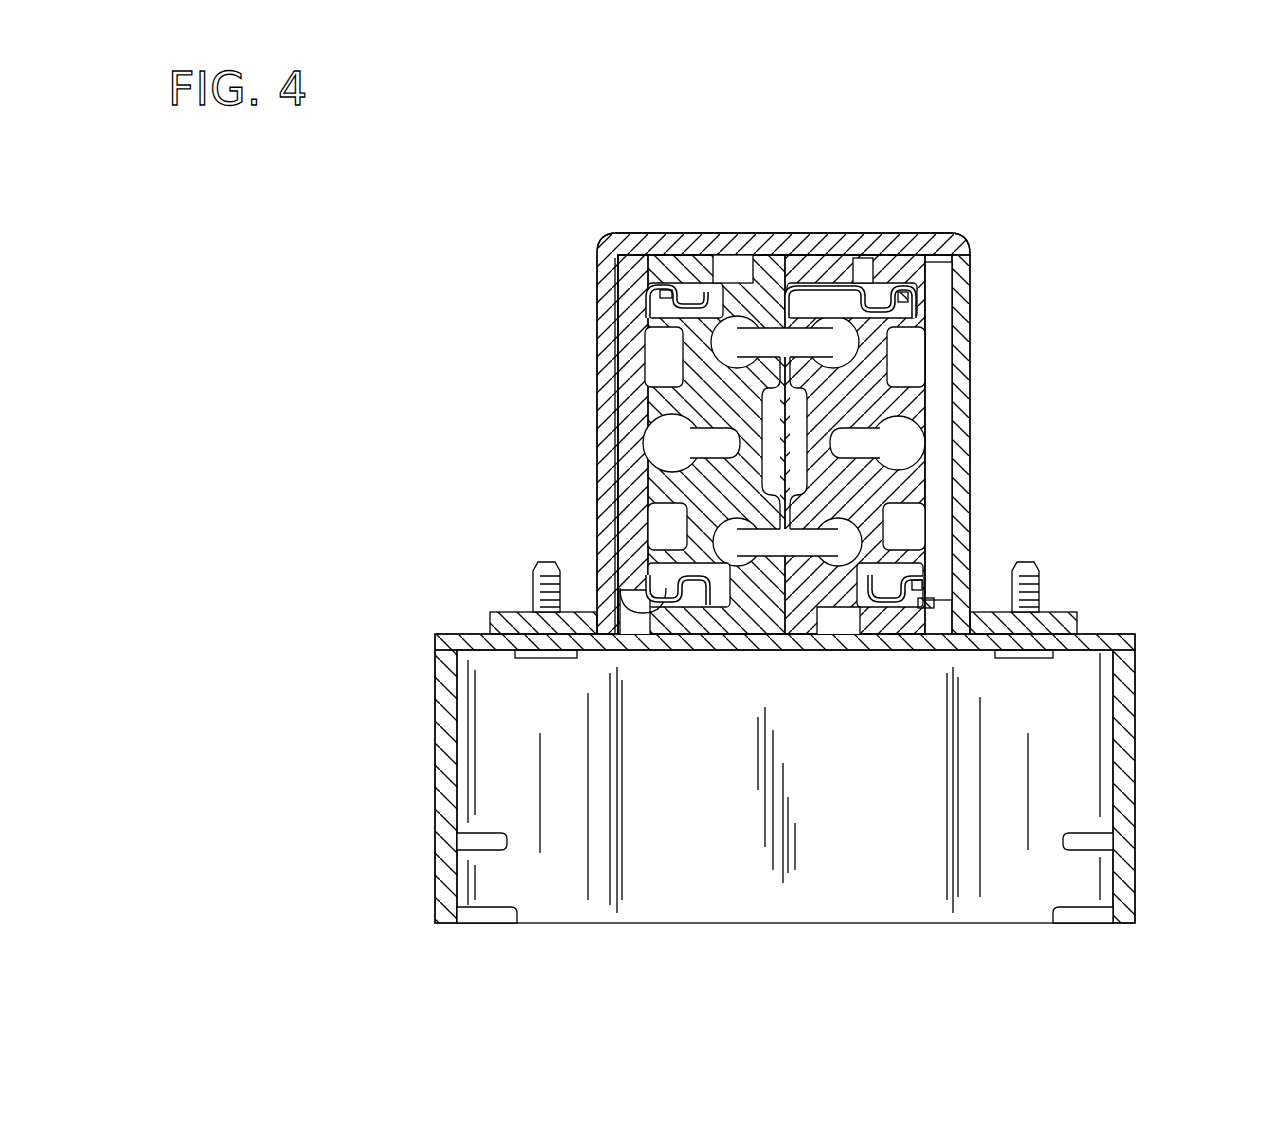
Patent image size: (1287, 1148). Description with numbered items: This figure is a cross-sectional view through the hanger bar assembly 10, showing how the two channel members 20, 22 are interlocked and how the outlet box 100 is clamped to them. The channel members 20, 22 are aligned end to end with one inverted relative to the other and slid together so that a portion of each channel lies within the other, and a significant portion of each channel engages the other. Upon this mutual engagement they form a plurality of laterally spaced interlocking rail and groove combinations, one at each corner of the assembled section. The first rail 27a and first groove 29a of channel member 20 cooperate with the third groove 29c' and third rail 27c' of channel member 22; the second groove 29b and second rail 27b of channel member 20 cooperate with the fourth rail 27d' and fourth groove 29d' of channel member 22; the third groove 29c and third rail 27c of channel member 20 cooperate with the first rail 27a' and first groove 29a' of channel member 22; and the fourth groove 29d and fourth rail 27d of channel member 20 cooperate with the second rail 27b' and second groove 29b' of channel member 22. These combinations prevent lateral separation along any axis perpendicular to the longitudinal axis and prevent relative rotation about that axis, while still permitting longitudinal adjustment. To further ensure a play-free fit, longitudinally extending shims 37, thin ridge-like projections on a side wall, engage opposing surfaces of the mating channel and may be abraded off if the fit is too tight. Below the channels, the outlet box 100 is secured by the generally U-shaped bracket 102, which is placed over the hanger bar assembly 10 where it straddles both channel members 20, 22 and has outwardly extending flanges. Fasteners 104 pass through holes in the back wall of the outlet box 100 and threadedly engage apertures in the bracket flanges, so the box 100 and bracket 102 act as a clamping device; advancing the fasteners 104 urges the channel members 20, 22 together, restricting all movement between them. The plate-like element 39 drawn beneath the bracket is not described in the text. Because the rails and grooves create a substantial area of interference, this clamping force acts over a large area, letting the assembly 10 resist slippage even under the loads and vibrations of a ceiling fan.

The hanger bar assembly 10 is at (520, 195).
The bracket 102 is at (745, 244).
The first rail 27a is at (660, 246).
The third groove 29c' is at (722, 232).
The second rail 27b' is at (851, 248).
The second groove 29b' is at (920, 225).
The fourth rail 27d is at (922, 279).
The fourth groove 29d is at (976, 307).
The channel member 22 is at (947, 342).
The first groove 29a is at (577, 274).
The third rail 27c' is at (613, 302).
The channel member 20 is at (628, 375).
The fourth rail 27d' is at (626, 530).
The second groove 29b is at (587, 582).
The fastener 104 is at (540, 567).
The mounting plate 39 is at (497, 621).
The third groove 29c is at (969, 534).
The third rail 27c is at (996, 533).
The shim 37 is at (913, 577).
The first groove 29a' is at (1039, 619).
The fourth groove 29d' is at (781, 665).
The second rail 27b is at (675, 674).
The first rail 27a' is at (891, 660).
The outlet box 100 is at (1125, 905).